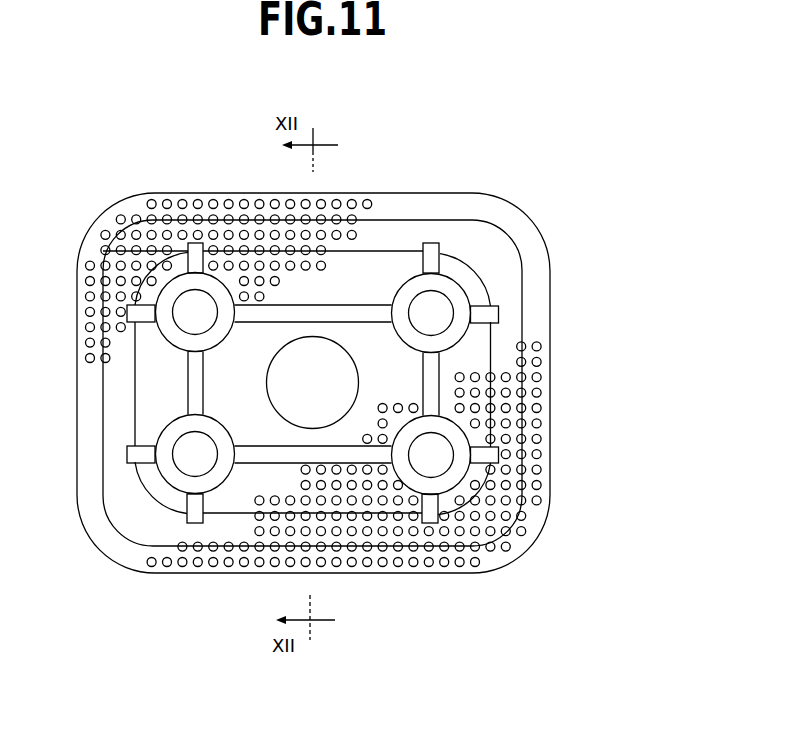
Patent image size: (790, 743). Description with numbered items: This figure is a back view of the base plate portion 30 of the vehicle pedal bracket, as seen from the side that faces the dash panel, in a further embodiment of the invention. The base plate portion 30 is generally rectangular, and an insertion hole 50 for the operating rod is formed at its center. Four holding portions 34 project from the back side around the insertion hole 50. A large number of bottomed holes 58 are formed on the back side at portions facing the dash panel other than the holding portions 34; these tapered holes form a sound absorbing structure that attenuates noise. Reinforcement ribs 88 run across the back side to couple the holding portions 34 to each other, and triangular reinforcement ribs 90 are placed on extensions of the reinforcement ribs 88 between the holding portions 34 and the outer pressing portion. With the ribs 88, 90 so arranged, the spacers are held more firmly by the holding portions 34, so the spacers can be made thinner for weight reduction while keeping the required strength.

The base plate portion 30 is at (553, 185).
The holding portion 34 is at (177, 283).
The insertion hole 50 is at (295, 342).
The bottomed hole 58 is at (165, 200).
The reinforcement rib 88 is at (192, 384).
The triangular reinforcement rib 90 is at (430, 243).